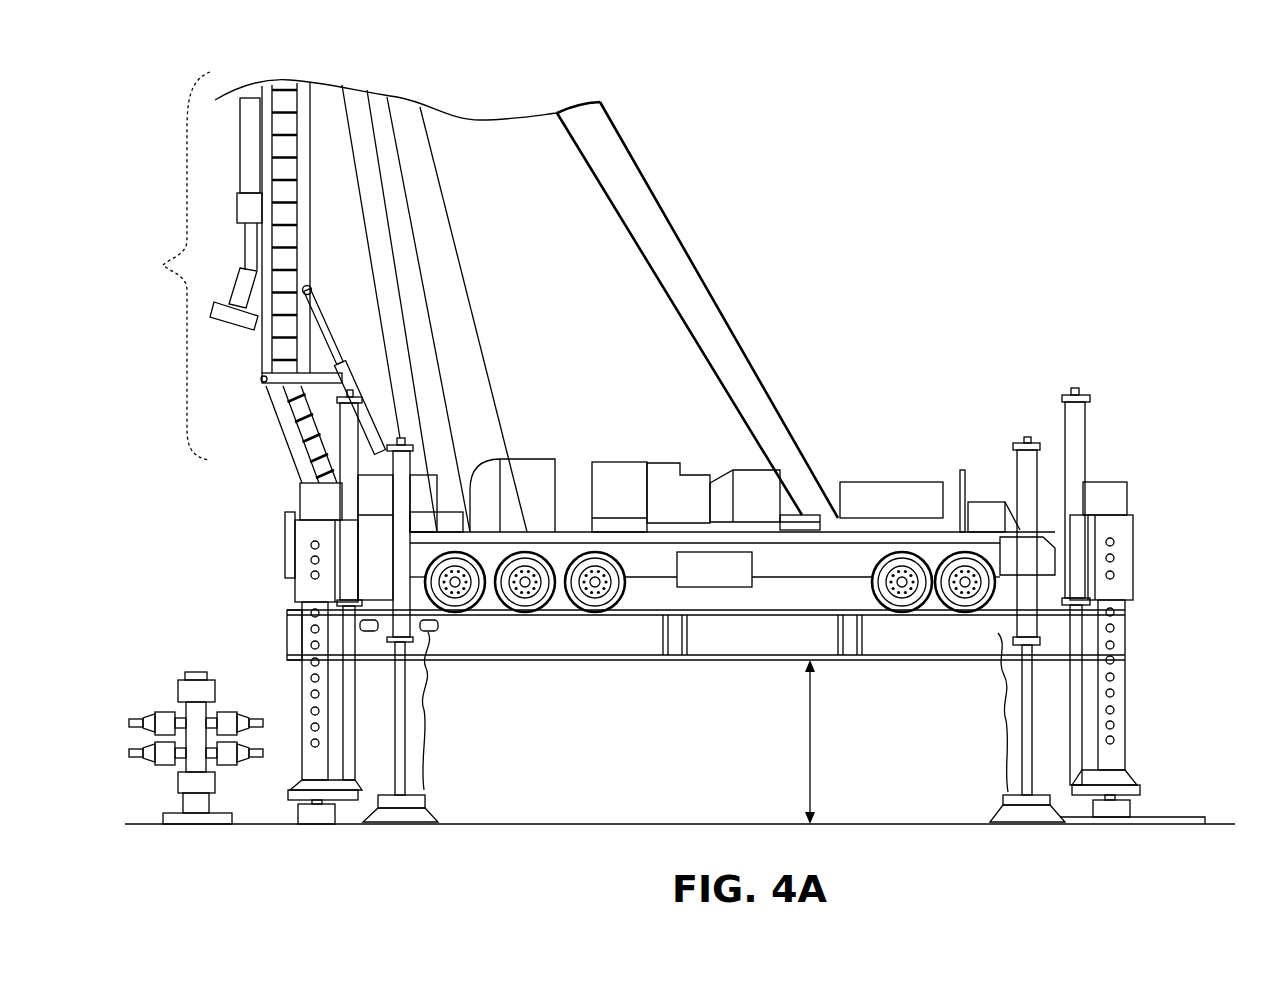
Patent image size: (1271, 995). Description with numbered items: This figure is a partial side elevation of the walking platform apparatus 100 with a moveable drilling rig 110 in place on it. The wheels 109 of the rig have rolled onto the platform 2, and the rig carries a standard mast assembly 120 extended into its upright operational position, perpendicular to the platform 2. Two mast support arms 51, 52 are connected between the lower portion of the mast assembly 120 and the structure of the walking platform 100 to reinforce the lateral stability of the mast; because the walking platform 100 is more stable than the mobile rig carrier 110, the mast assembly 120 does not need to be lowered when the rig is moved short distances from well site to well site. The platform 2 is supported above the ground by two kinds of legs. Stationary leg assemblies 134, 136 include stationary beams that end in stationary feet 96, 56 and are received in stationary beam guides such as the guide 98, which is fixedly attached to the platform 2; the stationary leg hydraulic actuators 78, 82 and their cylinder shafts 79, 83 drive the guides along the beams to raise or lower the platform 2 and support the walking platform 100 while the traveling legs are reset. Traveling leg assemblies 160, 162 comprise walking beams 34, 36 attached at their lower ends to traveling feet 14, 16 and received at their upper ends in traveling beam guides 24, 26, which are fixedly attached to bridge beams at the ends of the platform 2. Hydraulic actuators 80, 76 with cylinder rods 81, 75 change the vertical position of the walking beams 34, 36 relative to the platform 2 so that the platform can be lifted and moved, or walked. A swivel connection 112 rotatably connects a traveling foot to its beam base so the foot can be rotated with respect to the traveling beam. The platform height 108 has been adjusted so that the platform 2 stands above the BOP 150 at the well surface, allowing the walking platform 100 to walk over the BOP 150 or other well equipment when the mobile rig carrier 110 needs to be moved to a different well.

The platform 2 is at (762, 648).
The traveling foot 14 is at (258, 834).
The traveling foot 16 is at (1160, 824).
The traveling beam guide 24 is at (300, 555).
The traveling beam guide 26 is at (1125, 560).
The walking beam 34 is at (302, 705).
The walking beam 36 is at (1118, 668).
The mast support arm 51 is at (302, 466).
The mast support arm 52 is at (327, 337).
The stationary foot 56 is at (1025, 812).
The cylinder rod 75 is at (1082, 722).
The hydraulic actuator 76 is at (1078, 450).
The stationary leg hydraulic actuator 78 is at (1003, 497).
The cylinder shaft 79 is at (1027, 737).
The hydraulic actuator 80 is at (345, 505).
The cylinder rod 81 is at (352, 720).
The stationary leg hydraulic actuator 82 is at (410, 457).
The cylinder shaft 83 is at (400, 772).
The stationary foot 96 is at (405, 826).
The stationary beam guide 98 is at (345, 578).
The walking platform apparatus 100 is at (1035, 318).
The platform height 108 is at (815, 752).
The wheels 109 is at (590, 610).
The moveable drilling rig 110 is at (660, 436).
The swivel connection 112 is at (1128, 808).
The mast assembly 120 is at (341, 266).
The stationary leg assembly 134 is at (452, 710).
The stationary leg assembly 136 is at (982, 708).
The BOP 150 is at (178, 693).
The traveling leg assembly 160 is at (288, 770).
The traveling leg assembly 162 is at (1183, 742).